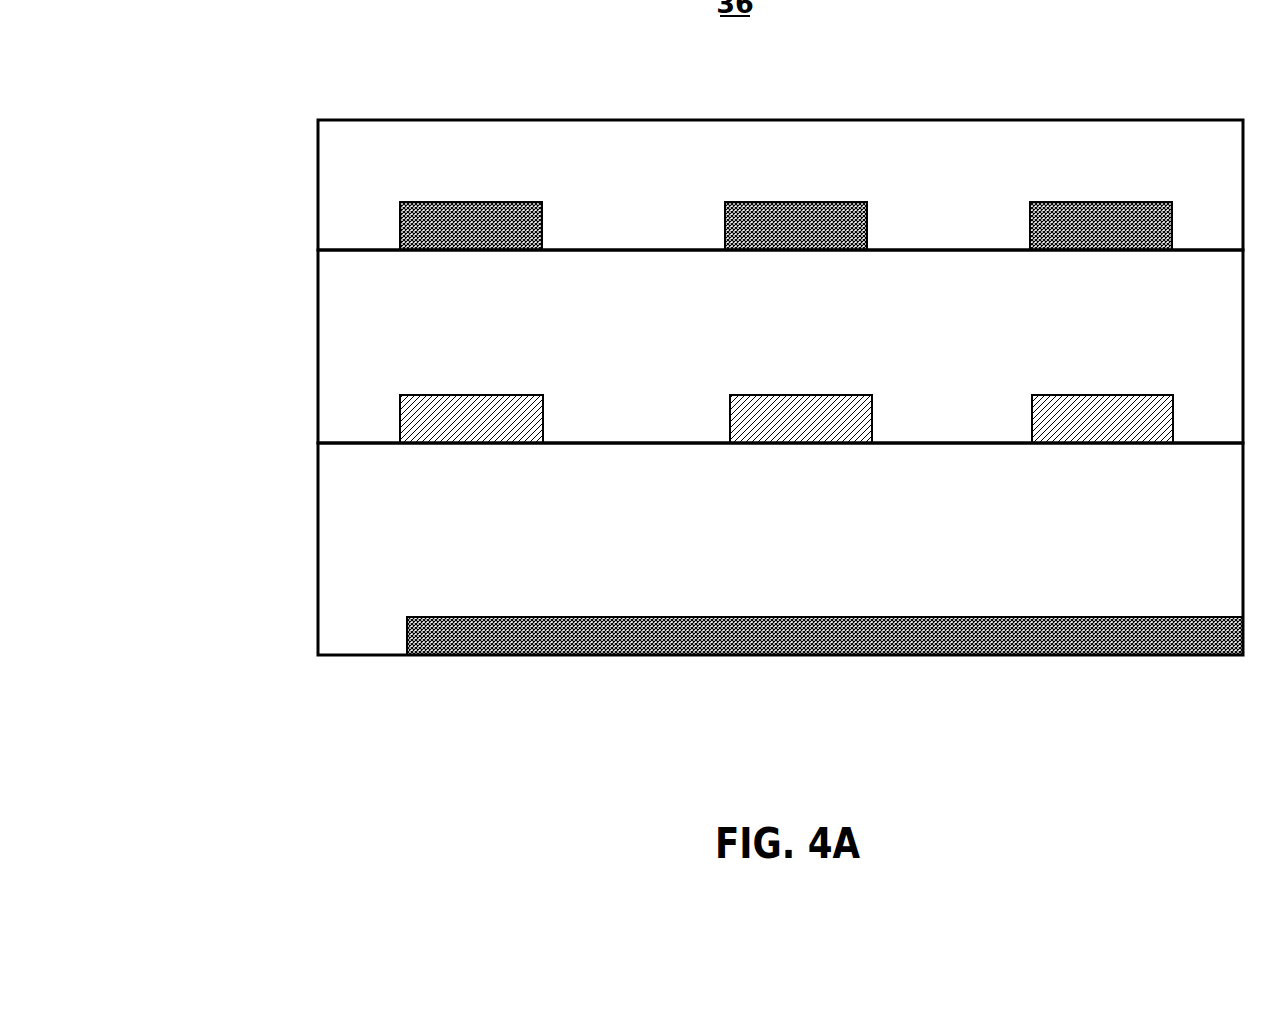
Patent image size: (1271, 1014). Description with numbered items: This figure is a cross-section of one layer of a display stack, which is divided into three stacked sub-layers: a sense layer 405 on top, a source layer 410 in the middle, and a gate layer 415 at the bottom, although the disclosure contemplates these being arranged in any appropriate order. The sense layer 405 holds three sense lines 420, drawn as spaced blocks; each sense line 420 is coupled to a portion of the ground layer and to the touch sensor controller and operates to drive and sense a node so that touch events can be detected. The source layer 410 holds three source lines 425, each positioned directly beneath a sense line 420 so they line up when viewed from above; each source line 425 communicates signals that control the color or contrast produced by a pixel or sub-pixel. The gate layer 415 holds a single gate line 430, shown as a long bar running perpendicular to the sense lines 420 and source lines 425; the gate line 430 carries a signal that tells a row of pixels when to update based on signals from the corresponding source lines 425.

The sense layer 405 is at (345, 161).
The source layer 410 is at (360, 320).
The gate layer 415 is at (355, 525).
The sense line 420 is at (465, 197).
The source line 425 is at (443, 392).
The gate line 430 is at (468, 614).